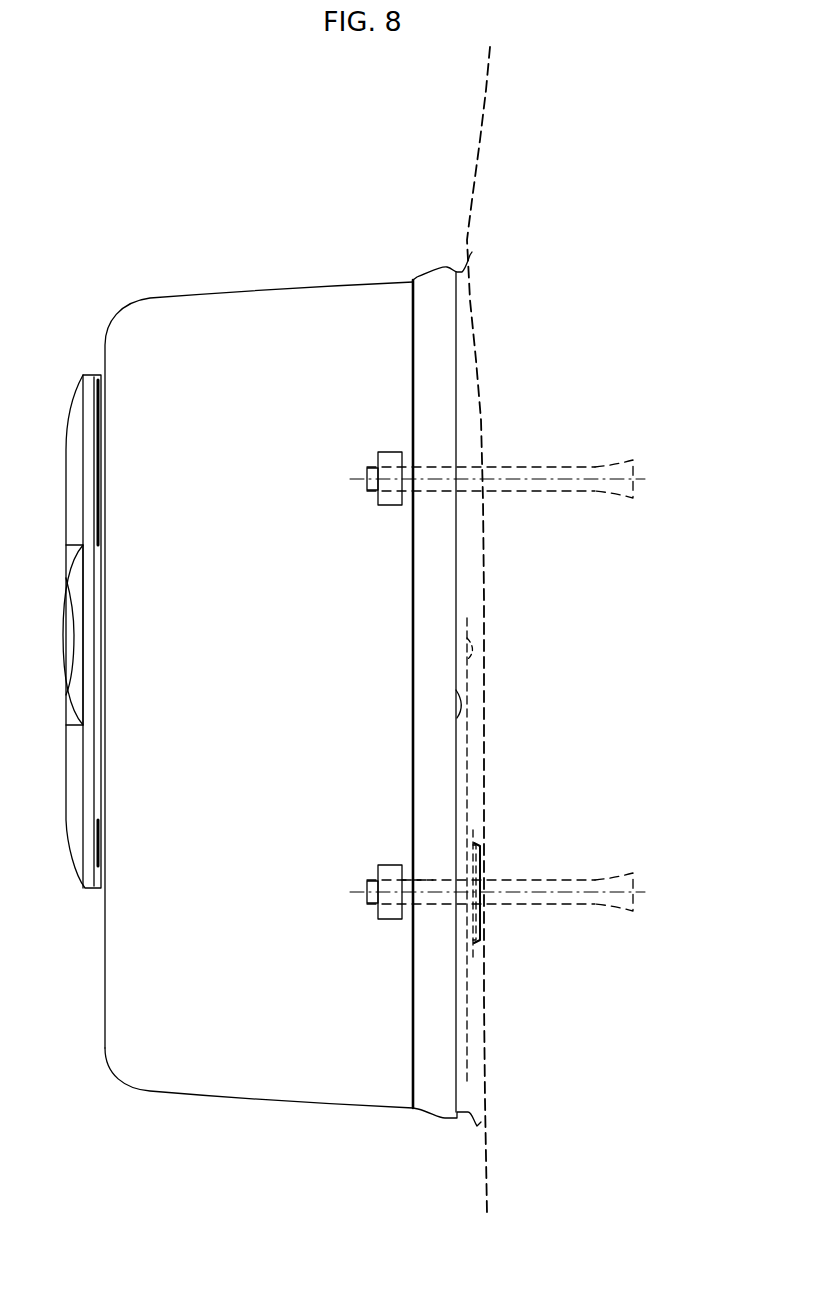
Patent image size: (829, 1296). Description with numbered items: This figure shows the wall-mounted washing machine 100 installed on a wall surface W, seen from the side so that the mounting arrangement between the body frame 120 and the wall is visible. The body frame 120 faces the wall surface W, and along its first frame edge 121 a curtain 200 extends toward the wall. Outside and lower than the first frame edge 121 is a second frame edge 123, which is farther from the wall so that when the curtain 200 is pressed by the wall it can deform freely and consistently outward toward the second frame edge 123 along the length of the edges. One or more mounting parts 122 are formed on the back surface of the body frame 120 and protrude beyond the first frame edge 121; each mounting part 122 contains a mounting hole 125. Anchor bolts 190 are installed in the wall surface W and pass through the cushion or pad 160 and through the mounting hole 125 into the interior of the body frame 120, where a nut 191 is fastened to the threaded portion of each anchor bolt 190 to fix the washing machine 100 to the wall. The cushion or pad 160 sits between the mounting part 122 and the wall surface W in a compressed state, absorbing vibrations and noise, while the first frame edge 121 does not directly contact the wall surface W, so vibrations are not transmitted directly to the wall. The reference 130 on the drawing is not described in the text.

The washing machine 100 is at (133, 222).
The housing body 130 is at (287, 308).
The body frame 120 is at (420, 268).
The first frame edge 121 is at (470, 658).
The mounting part 122 is at (476, 925).
The second frame edge 123 is at (456, 712).
The mounting hole 125 is at (433, 907).
The cushion and/or pad 160 is at (480, 862).
The anchor bolt 190 is at (613, 458).
The nut 191 is at (390, 866).
The curtain 200 is at (474, 388).
The wall surface W is at (478, 128).